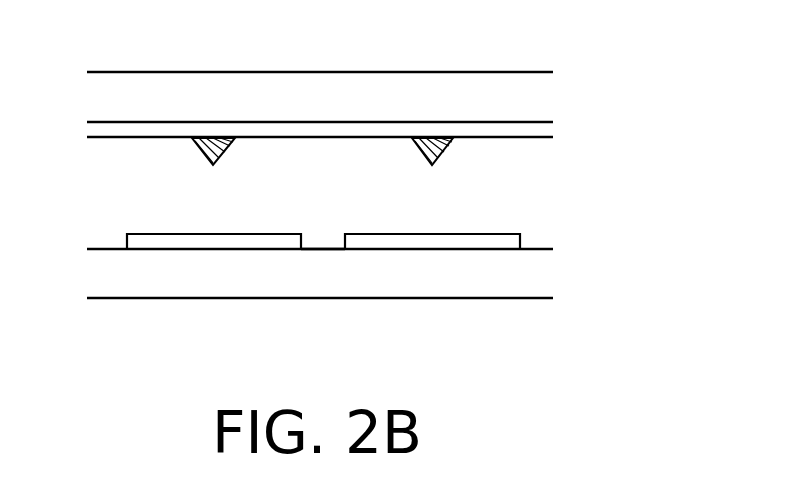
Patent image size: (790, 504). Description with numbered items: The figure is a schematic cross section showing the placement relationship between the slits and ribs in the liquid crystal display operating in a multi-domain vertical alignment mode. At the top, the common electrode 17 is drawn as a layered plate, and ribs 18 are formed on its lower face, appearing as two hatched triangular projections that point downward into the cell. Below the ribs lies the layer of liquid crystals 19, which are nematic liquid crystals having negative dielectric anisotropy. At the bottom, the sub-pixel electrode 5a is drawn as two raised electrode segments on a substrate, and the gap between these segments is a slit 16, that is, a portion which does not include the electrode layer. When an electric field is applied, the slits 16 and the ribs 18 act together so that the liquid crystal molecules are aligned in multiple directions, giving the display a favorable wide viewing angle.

The common electrode 17 is at (552, 123).
The rib 18 is at (212, 138).
The liquid crystals 19 is at (523, 187).
The sub-pixel electrode 5a is at (520, 235).
The slit 16 is at (317, 238).